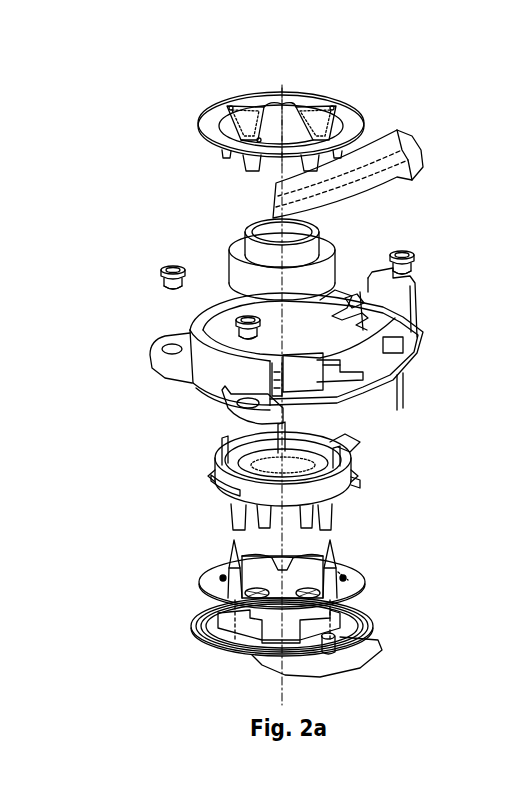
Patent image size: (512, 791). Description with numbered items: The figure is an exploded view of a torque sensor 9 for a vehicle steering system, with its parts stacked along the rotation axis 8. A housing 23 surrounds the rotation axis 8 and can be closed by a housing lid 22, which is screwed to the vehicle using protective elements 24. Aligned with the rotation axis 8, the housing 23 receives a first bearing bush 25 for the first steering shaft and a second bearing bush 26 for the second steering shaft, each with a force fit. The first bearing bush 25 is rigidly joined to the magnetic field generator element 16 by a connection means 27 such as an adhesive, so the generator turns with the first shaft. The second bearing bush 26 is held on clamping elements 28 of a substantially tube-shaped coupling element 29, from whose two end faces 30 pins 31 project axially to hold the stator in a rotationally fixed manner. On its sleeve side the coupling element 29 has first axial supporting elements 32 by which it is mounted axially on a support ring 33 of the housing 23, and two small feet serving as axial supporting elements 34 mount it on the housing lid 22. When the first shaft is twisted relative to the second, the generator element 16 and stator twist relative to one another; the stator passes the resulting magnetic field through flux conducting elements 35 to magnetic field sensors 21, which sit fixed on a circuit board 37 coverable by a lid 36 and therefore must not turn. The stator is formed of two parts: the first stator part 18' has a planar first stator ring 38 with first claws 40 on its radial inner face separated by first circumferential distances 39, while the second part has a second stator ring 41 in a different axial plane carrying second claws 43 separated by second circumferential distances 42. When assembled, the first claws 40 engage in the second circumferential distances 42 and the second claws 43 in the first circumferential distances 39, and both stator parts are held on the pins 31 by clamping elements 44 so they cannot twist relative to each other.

The rotation axis 8 is at (261, 114).
The torque sensor 9 is at (446, 124).
The magnetic field generator element 16 is at (275, 250).
The first stator part 18' is at (246, 381).
The magnetic field sensor 21 is at (331, 338).
The housing lid 22 is at (194, 620).
The housing 23 is at (150, 358).
The protective element 24 is at (415, 268).
The first bearing bush 25 is at (325, 240).
The second bearing bush 26 is at (300, 481).
The connection means 27 is at (242, 240).
The clamping element 28 is at (345, 458).
The coupling element 29 is at (352, 484).
The end face 30 is at (216, 449).
The pin 31 is at (222, 452).
The first axial supporting element 32 is at (211, 478).
The support ring 33 is at (222, 322).
The axial supporting element 34 is at (345, 578).
The flux conducting element 35 is at (340, 298).
The lid 36 is at (388, 133).
The circuit board 37 is at (420, 292).
The first stator ring 38 is at (200, 122).
The first circumferential distance 39 is at (281, 137).
The first claw 40 is at (308, 112).
The second stator ring 41 is at (210, 575).
The second circumferential distance 42 is at (267, 585).
The second claw 43 is at (228, 552).
The clamping element 44 is at (231, 107).